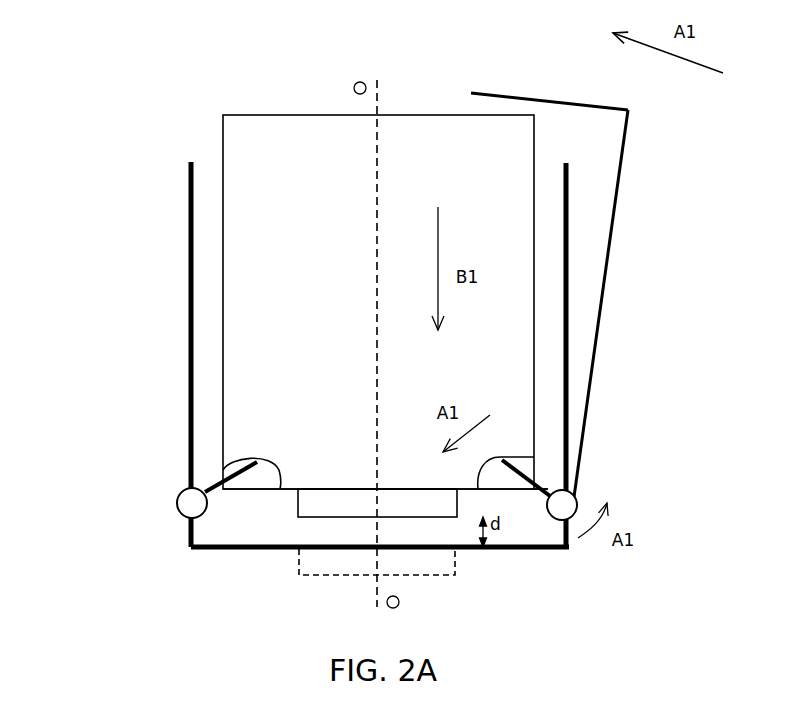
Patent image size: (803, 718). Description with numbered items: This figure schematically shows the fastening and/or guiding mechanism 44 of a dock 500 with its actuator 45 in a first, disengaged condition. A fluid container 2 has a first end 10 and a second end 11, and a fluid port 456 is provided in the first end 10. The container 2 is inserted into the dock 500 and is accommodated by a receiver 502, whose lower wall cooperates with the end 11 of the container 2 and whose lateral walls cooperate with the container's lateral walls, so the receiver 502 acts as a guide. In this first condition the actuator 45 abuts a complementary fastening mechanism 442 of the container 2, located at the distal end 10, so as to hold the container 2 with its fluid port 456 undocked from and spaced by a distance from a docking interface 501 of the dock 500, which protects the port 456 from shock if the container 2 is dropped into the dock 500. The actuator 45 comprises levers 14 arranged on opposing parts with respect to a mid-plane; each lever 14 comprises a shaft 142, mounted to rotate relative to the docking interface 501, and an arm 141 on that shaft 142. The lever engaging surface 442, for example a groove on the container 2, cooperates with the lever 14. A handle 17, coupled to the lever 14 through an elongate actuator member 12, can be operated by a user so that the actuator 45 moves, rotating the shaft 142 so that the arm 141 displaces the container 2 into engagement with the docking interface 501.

The fluid container 2 is at (285, 360).
The first end 10 is at (223, 452).
The second end 11 is at (223, 133).
The elongate actuator member 12 is at (607, 277).
The lever 14 is at (580, 535).
The handle 17 is at (540, 102).
The fastening mechanism 44 is at (596, 276).
The actuator 45 is at (612, 422).
The arm 141 is at (545, 490).
The shaft 142 is at (573, 497).
The complementary fastening mechanism 442 is at (549, 448).
The fluid port 456 is at (313, 505).
The dock 500 is at (387, 367).
The docking interface 501 is at (298, 562).
The receiver 502 is at (187, 305).